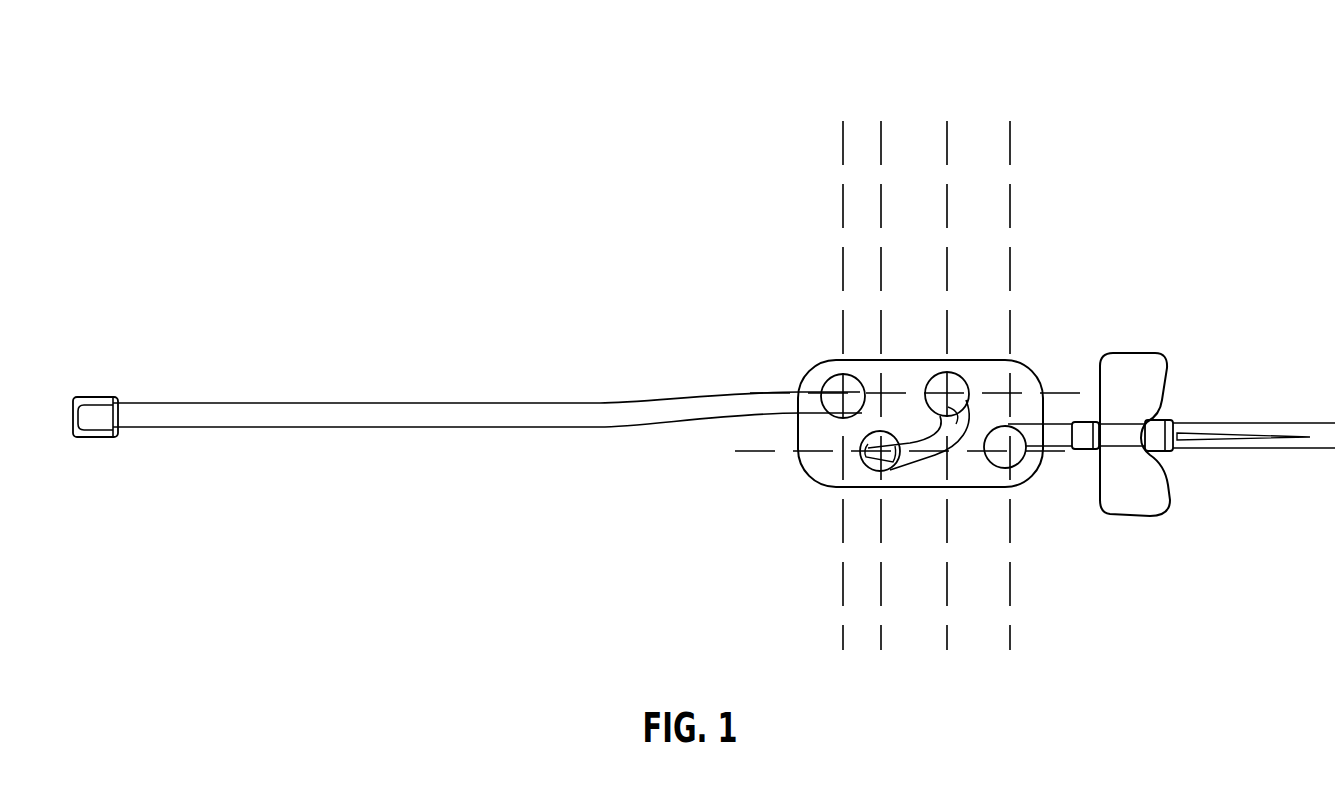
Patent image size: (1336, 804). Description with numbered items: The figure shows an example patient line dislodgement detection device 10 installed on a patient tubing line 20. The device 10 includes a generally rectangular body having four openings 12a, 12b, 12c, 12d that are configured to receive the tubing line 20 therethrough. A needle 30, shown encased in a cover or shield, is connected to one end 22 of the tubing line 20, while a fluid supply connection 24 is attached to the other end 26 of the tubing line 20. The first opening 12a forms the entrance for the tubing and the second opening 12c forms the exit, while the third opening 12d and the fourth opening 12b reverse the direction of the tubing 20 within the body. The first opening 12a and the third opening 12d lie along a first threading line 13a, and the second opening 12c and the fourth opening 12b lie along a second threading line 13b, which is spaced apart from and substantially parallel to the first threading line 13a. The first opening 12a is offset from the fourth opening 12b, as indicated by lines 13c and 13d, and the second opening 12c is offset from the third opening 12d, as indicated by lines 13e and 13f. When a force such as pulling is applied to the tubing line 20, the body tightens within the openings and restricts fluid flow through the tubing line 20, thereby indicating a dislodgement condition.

The patient line dislodgement detection device 10 is at (919, 300).
The first opening 12a is at (836, 376).
The fourth opening 12b is at (866, 445).
The second opening 12c is at (1006, 466).
The third opening 12d is at (951, 376).
The first threading line 13a is at (768, 394).
The second threading line 13b is at (757, 456).
The line 13c is at (841, 138).
The line 13d is at (881, 138).
The line 13e is at (948, 138).
The line 13f is at (1012, 138).
The tubing line 20 is at (651, 385).
The end of the tubing line 22 is at (1082, 450).
The fluid supply connection 24 is at (100, 396).
The other end of the tubing line 26 is at (114, 466).
The needle 30 is at (1212, 423).